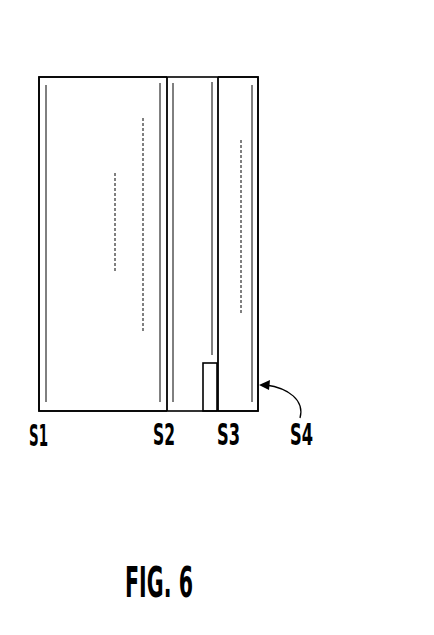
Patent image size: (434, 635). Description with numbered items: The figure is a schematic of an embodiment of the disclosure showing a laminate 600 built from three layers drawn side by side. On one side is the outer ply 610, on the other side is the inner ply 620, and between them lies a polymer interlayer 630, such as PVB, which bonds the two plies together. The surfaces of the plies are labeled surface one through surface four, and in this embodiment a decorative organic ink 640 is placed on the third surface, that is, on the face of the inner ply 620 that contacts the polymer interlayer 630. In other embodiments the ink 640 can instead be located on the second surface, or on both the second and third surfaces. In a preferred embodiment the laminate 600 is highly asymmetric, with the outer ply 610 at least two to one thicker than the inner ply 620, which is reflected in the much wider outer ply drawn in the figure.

The laminate 600 is at (314, 204).
The outer ply 610 is at (82, 95).
The inner ply 620 is at (238, 83).
The polymer interlayer 630 is at (182, 95).
The decorative organic ink 640 is at (207, 420).